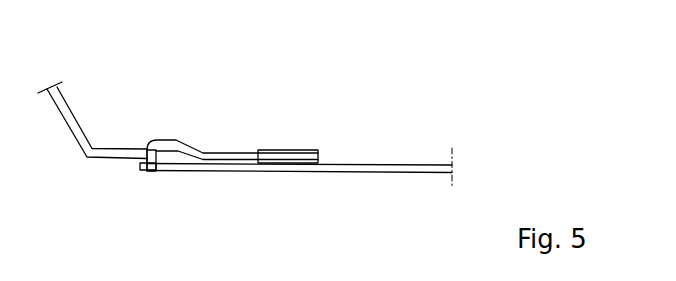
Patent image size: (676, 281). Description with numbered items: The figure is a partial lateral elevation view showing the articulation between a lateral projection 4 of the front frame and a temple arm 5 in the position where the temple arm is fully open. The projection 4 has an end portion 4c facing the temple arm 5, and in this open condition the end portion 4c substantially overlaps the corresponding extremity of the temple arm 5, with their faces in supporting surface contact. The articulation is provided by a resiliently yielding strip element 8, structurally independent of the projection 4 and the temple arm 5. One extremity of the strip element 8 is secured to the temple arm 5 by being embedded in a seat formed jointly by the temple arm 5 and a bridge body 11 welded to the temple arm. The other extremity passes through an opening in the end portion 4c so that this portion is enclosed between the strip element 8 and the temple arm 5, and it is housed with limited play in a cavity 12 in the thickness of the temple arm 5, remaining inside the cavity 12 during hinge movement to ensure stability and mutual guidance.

The lateral projection 4 is at (73, 115).
The end portion of the projection 4c is at (160, 150).
The temple arm 5 is at (397, 165).
The resiliently yielding element 8 is at (213, 153).
The bridge body 11 is at (297, 150).
The cavity 12 is at (139, 167).